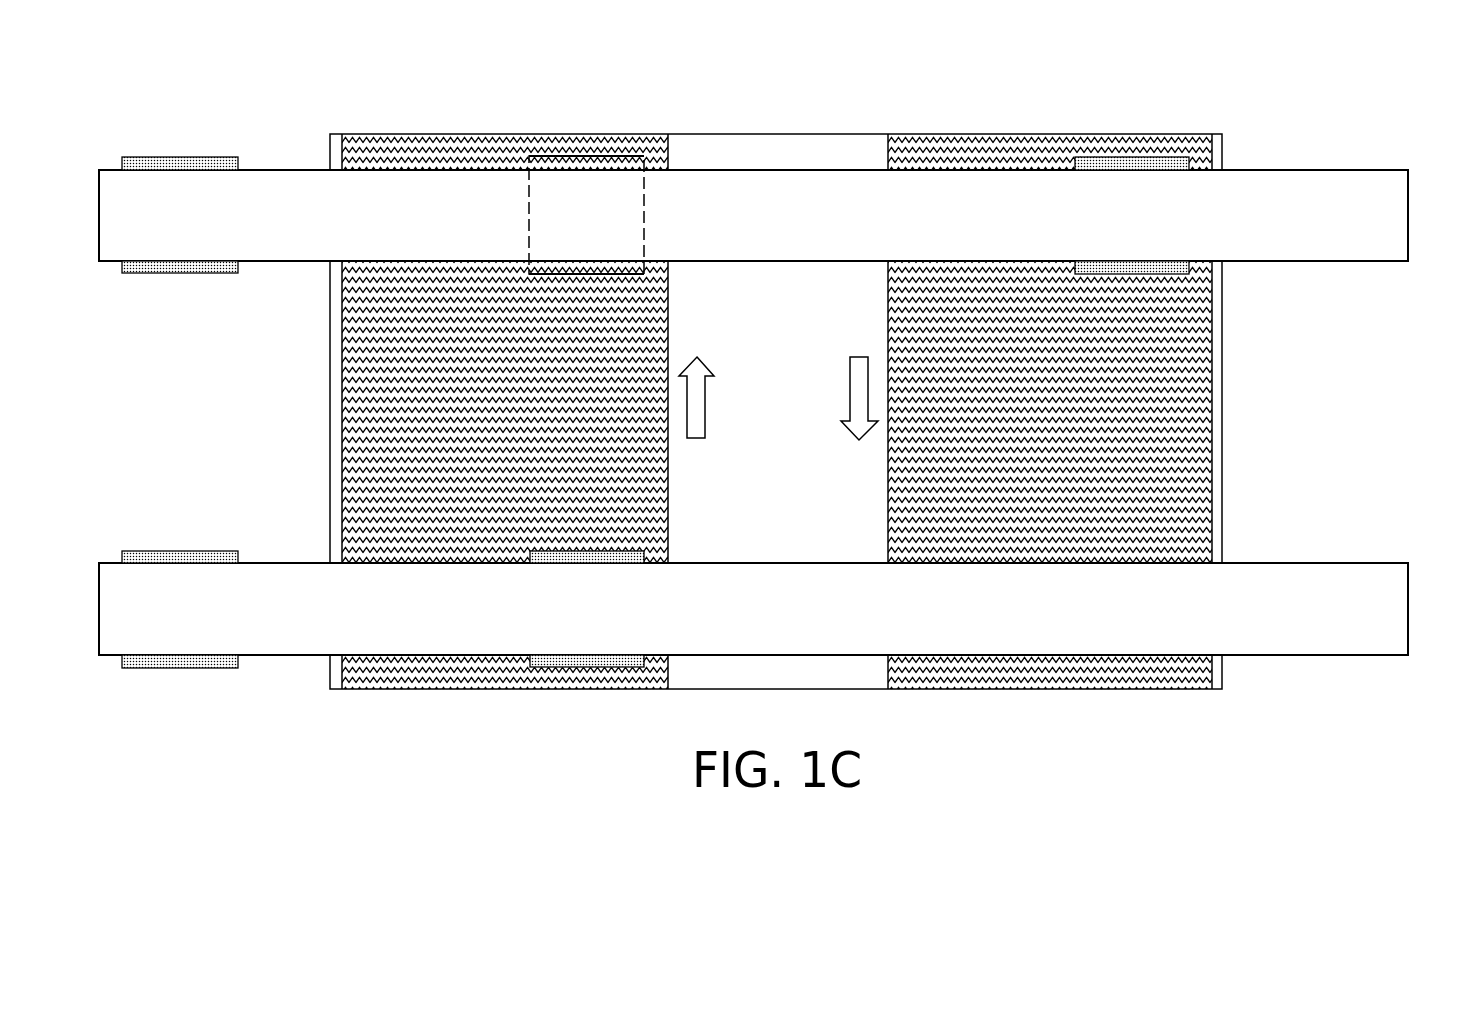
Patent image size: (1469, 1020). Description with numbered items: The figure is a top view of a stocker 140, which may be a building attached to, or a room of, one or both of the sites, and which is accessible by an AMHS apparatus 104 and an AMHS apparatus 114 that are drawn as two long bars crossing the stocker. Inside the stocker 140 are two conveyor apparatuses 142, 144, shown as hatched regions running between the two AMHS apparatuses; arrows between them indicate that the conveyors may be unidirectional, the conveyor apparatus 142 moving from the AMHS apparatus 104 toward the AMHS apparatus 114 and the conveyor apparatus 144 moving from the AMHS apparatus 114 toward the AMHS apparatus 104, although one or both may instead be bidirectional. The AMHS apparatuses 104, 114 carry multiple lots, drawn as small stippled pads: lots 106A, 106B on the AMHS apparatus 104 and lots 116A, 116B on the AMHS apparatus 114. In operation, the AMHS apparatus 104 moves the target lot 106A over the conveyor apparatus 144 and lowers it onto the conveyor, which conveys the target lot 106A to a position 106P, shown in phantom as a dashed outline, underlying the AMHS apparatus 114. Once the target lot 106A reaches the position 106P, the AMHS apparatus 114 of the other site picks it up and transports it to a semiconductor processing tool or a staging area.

The AMHS apparatus 104 is at (1400, 610).
The AMHS apparatus 114 is at (1400, 216).
The target lot 106A is at (610, 551).
The lot 106B is at (178, 551).
The position 106P is at (597, 156).
The lot 116A is at (178, 157).
The lot 116B is at (1133, 157).
The stocker 140 is at (256, 349).
The conveyor apparatus 142 is at (1200, 412).
The conveyor apparatus 144 is at (346, 412).